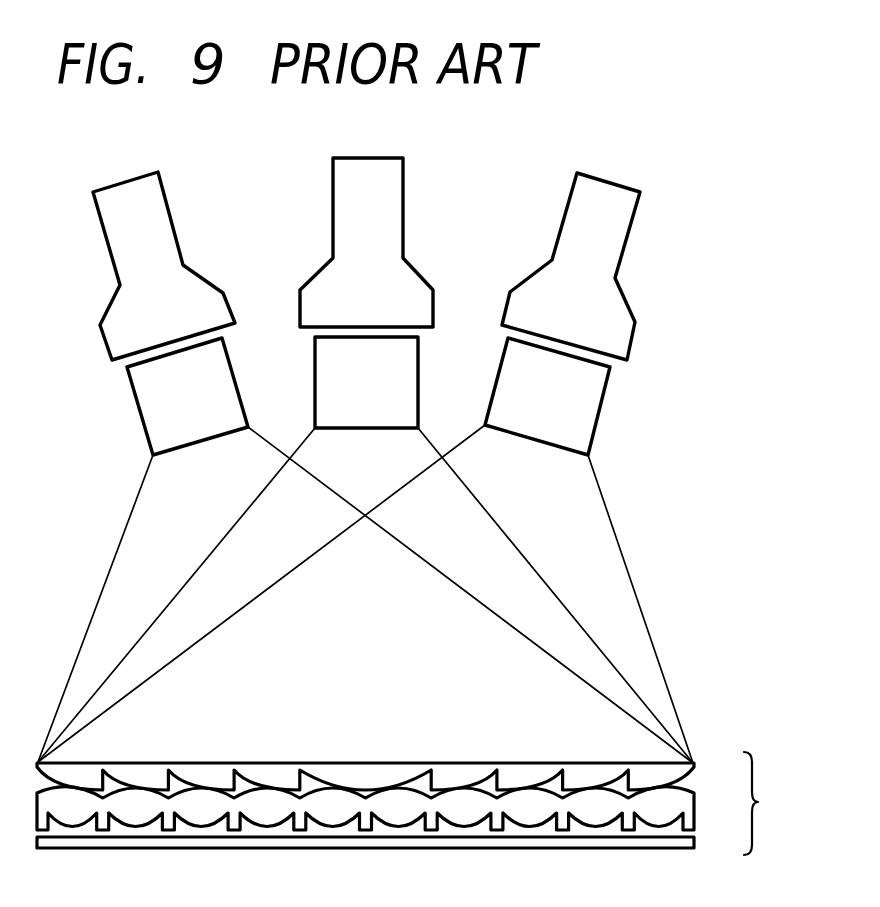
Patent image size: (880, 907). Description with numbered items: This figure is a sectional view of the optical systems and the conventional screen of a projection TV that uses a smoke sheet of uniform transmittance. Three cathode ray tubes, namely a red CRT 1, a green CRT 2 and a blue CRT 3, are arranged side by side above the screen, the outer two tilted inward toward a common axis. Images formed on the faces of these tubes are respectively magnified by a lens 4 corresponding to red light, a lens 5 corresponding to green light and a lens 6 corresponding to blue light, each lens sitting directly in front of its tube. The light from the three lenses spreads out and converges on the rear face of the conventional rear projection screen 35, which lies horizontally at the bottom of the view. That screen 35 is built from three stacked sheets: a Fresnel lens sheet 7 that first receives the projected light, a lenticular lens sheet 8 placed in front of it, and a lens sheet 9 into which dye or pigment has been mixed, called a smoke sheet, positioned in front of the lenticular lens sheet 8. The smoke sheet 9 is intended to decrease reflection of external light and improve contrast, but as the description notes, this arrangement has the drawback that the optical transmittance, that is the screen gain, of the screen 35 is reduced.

The red CRT 1 is at (181, 229).
The green CRT 2 is at (405, 222).
The blue CRT 3 is at (634, 224).
The lens corresponding to red light 4 is at (241, 403).
The lens corresponding to green light 5 is at (420, 402).
The lens corresponding to blue light 6 is at (606, 401).
The Fresnel lens sheet 7 is at (696, 764).
The lenticular lens sheet 8 is at (696, 801).
The lens sheet (smoke sheet) 9 is at (696, 839).
The conventional rear projection screen 35 is at (772, 803).